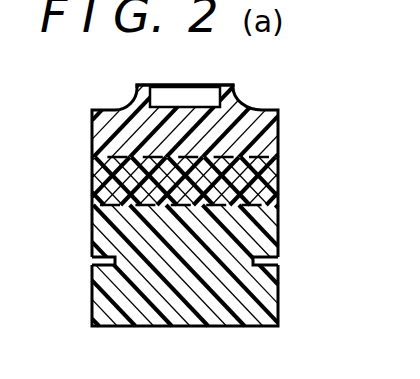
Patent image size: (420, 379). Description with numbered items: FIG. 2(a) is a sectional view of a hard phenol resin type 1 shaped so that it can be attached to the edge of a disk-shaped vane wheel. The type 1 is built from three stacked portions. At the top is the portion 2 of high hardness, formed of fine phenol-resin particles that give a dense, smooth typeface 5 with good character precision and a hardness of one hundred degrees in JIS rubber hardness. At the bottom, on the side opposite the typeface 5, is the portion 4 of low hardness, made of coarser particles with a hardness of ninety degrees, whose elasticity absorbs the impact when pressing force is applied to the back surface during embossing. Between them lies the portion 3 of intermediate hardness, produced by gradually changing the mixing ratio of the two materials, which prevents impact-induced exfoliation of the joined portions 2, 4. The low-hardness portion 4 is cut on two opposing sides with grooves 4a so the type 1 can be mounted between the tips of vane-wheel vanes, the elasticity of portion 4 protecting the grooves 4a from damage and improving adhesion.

The type 1 is at (214, 81).
The portion of high hardness 2 is at (272, 131).
The portion of intermediate hardness 3 is at (273, 188).
The portion of low hardness 4 is at (270, 306).
The grooves 4a is at (97, 260).
The typeface 5 is at (150, 85).